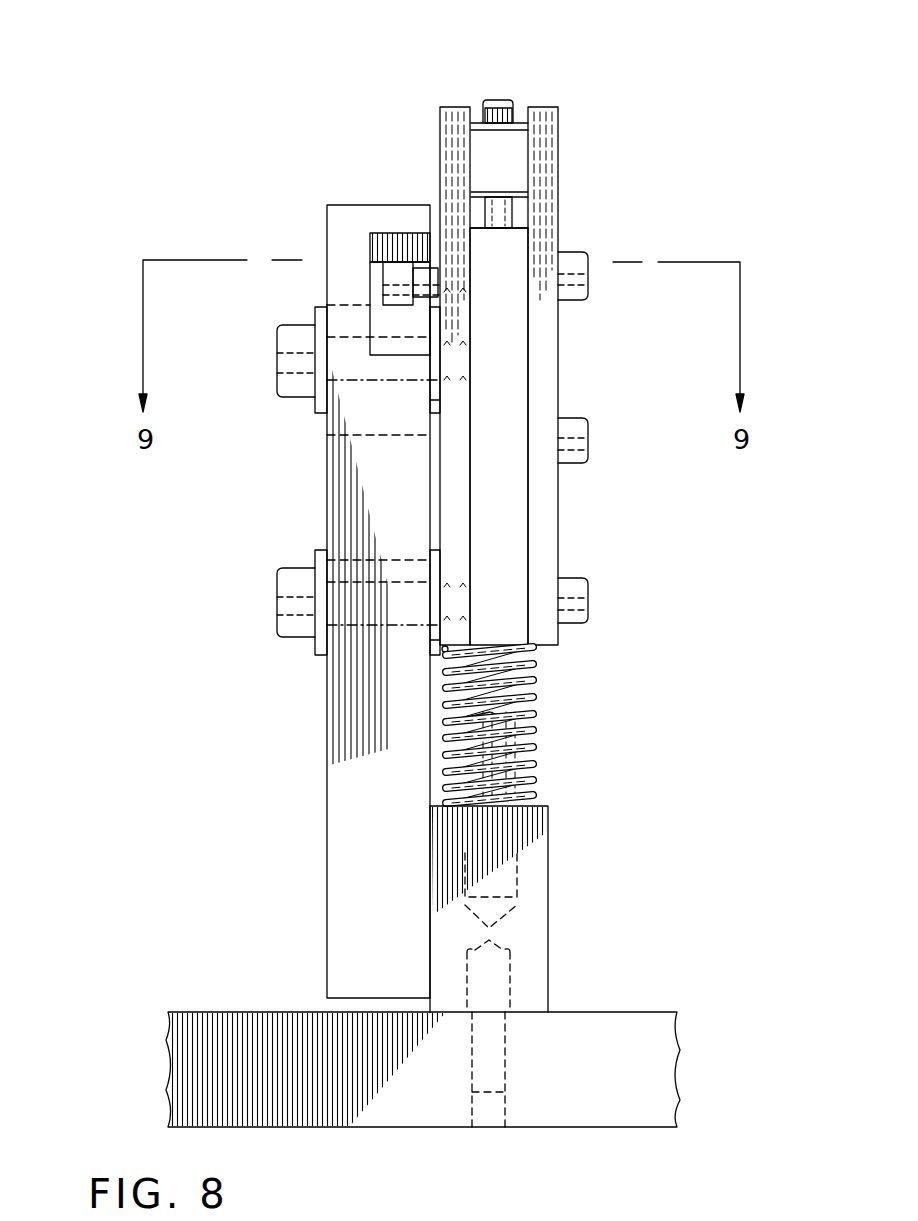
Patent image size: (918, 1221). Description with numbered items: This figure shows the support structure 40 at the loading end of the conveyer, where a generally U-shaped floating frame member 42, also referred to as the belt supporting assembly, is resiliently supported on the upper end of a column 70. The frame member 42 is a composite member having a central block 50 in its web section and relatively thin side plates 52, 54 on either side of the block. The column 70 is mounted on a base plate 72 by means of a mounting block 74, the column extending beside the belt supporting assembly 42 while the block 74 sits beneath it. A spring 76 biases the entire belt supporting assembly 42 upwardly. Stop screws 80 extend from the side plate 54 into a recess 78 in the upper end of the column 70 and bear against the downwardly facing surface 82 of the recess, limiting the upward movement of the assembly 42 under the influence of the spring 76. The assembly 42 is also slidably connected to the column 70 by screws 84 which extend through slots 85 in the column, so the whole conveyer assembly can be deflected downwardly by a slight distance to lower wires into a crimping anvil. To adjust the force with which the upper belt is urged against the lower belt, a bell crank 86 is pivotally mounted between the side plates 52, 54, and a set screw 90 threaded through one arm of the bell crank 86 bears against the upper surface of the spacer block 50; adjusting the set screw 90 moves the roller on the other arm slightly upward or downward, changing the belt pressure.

The support structure 40 is at (302, 118).
The floating frame member 42 is at (568, 160).
The central block 50 is at (518, 553).
The side plate 52 is at (543, 628).
The side plate 54 is at (462, 472).
The column 70 is at (342, 783).
The base plate 72 is at (583, 1100).
The mounting block 74 is at (535, 922).
The spring 76 is at (537, 727).
The recess 78 is at (363, 325).
The stop screws 80 is at (428, 277).
The downwardly facing surface 82 is at (370, 277).
The screws 84 is at (277, 607).
The slots 85 is at (350, 656).
The bell crank 86 is at (520, 123).
The set screw 90 is at (488, 106).